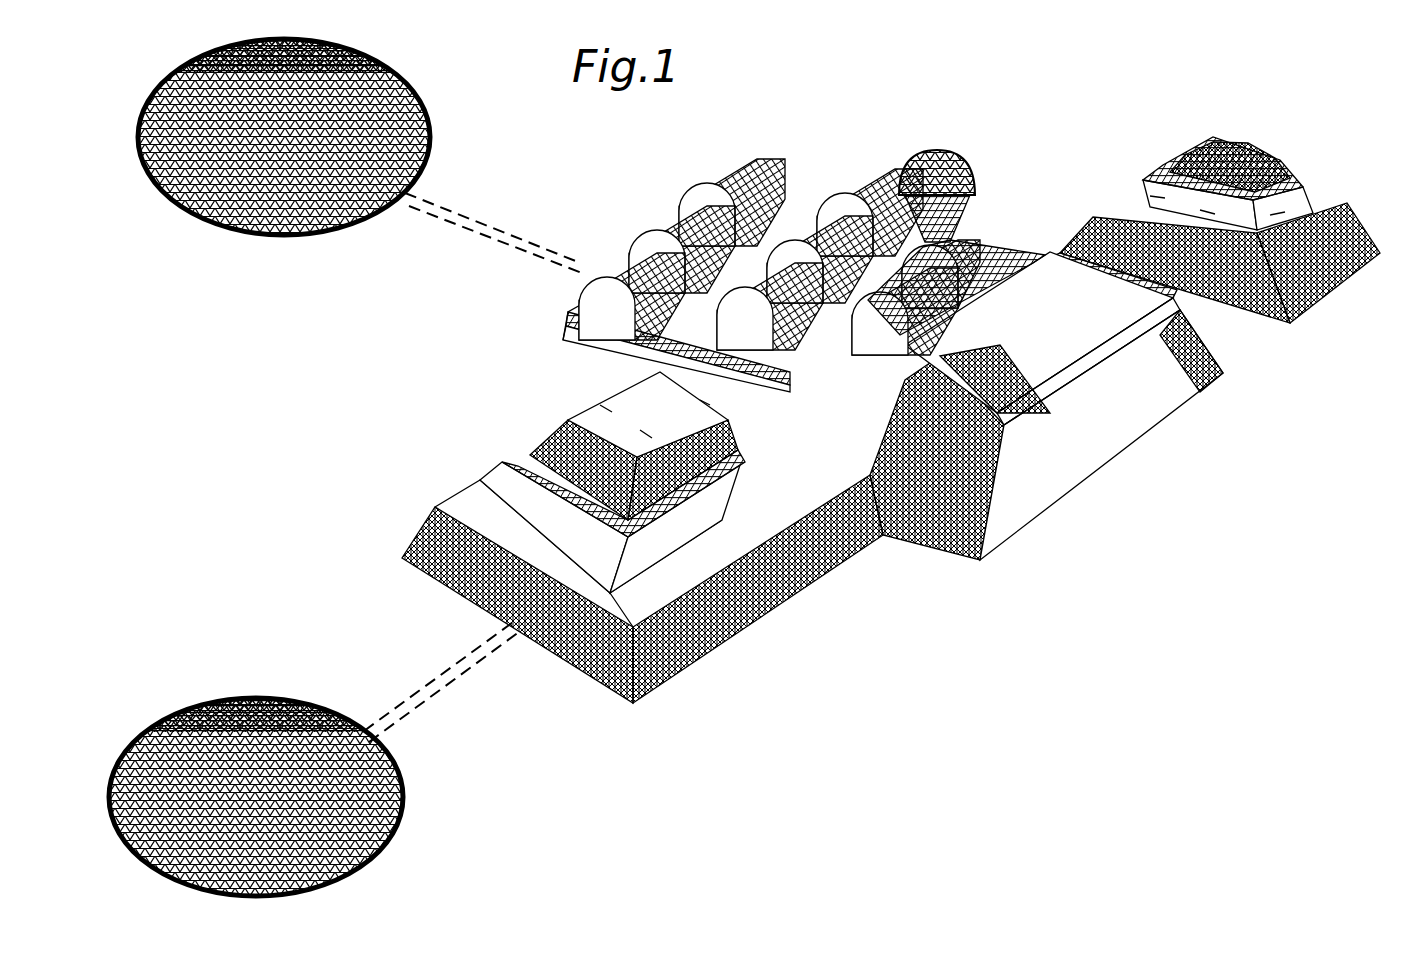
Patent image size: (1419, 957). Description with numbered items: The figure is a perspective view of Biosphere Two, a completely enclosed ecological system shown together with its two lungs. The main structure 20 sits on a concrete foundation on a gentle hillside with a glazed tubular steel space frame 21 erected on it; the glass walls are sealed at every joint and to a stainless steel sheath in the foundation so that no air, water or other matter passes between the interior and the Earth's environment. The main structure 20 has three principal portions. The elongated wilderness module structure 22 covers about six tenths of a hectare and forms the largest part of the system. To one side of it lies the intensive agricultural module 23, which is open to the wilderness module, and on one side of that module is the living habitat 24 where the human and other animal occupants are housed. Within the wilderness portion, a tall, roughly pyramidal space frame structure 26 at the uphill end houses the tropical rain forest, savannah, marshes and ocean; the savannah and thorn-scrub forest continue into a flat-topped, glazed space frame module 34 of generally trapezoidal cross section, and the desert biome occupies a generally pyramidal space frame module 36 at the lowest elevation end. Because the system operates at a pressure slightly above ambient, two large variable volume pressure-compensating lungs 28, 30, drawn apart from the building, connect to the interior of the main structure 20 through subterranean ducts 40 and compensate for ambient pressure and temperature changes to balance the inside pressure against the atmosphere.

The main structure 20 is at (850, 708).
The glazed tubular steel space frame 21 is at (1017, 543).
The wilderness module structure 22 is at (737, 632).
The intensive agricultural module 23 is at (610, 233).
The living habitat 24 is at (973, 212).
The pyramidal space frame structure 26 is at (1300, 185).
The lung 28 is at (407, 93).
The lung 30 is at (220, 698).
The space frame module 34 is at (1180, 403).
The pyramidal space frame module 36 is at (517, 458).
The subterranean ducts 40 is at (505, 215).